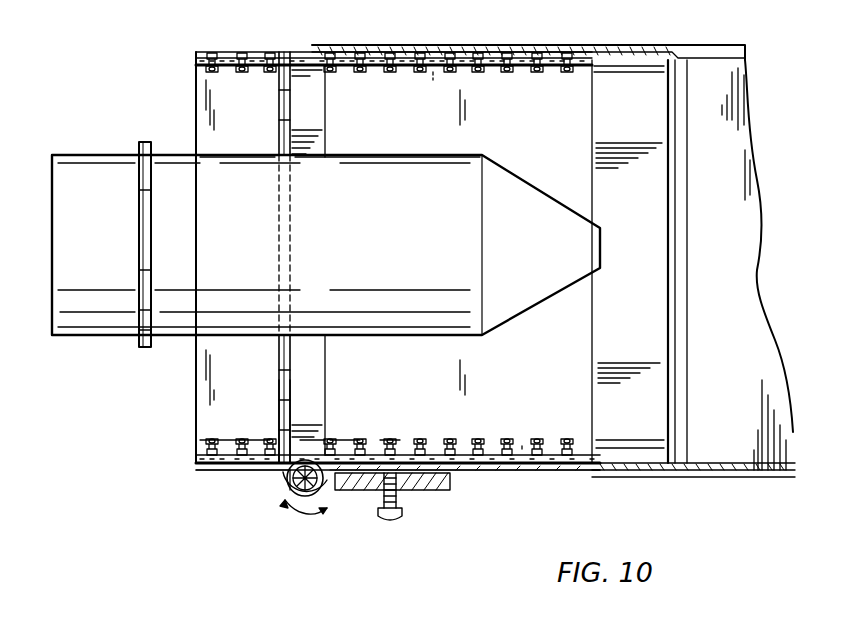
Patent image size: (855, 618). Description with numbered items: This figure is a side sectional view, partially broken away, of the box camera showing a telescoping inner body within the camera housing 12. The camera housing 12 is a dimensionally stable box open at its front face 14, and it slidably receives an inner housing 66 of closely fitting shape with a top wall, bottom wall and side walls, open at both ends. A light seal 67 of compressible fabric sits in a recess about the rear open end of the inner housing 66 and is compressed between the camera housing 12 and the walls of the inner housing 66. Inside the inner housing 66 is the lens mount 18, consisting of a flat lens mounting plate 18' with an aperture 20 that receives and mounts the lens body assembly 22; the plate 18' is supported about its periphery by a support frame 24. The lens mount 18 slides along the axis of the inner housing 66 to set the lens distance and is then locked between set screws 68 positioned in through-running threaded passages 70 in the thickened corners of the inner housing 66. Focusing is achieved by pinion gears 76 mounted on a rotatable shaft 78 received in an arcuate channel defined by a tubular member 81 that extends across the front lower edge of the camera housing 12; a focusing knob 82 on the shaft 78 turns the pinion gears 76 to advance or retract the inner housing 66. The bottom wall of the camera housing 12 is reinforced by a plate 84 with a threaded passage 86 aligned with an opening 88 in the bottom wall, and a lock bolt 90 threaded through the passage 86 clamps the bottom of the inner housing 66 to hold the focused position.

The camera housing 12 is at (700, 47).
The front face 14 is at (292, 52).
The lens mount 18 is at (300, 257).
The lens mounting plate 18' is at (261, 406).
The aperture 20 is at (290, 160).
The lens body assembly 22 is at (354, 268).
The support frame 24 is at (308, 64).
The inner housing 66 is at (560, 455).
The light seal 67 is at (612, 468).
The set screws 68 is at (508, 72).
The threaded passages 70 is at (434, 74).
The pinion gears 76 is at (288, 494).
The rotatable shaft 78 is at (300, 502).
The tubular member 81 is at (337, 490).
The focusing knob 82 is at (262, 470).
The plate 84 is at (452, 490).
The threaded passage 86 is at (406, 490).
The opening 88 is at (372, 445).
The lock bolt 90 is at (390, 516).